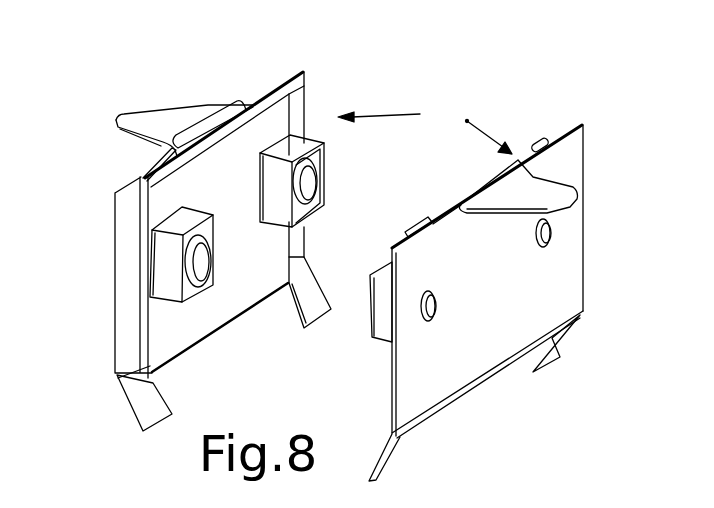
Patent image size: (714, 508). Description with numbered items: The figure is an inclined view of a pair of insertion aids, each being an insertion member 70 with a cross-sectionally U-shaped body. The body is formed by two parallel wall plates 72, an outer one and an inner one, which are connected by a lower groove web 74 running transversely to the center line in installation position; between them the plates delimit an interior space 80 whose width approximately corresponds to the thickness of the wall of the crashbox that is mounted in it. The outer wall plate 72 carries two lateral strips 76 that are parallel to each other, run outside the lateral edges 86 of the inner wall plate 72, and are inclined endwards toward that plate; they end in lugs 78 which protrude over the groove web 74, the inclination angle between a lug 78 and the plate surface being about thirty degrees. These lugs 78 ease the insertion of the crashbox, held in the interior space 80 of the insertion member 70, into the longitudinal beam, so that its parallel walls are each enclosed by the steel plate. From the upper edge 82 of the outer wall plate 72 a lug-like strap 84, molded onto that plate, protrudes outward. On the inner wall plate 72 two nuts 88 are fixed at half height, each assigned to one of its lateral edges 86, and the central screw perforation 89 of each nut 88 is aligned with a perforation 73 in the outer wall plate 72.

The insertion member 70 is at (425, 128).
The wall plate 72 is at (270, 70).
The perforation 73 is at (545, 248).
The groove web 74 is at (200, 343).
The lateral strip 76 is at (132, 230).
The lug 78 is at (147, 408).
The interior space 80 is at (236, 100).
The upper edge 82 is at (143, 173).
The lug-like strap 84 is at (138, 122).
The lateral edge 86 is at (150, 337).
The nut 88 is at (185, 222).
The central screw perforation 89 is at (303, 189).